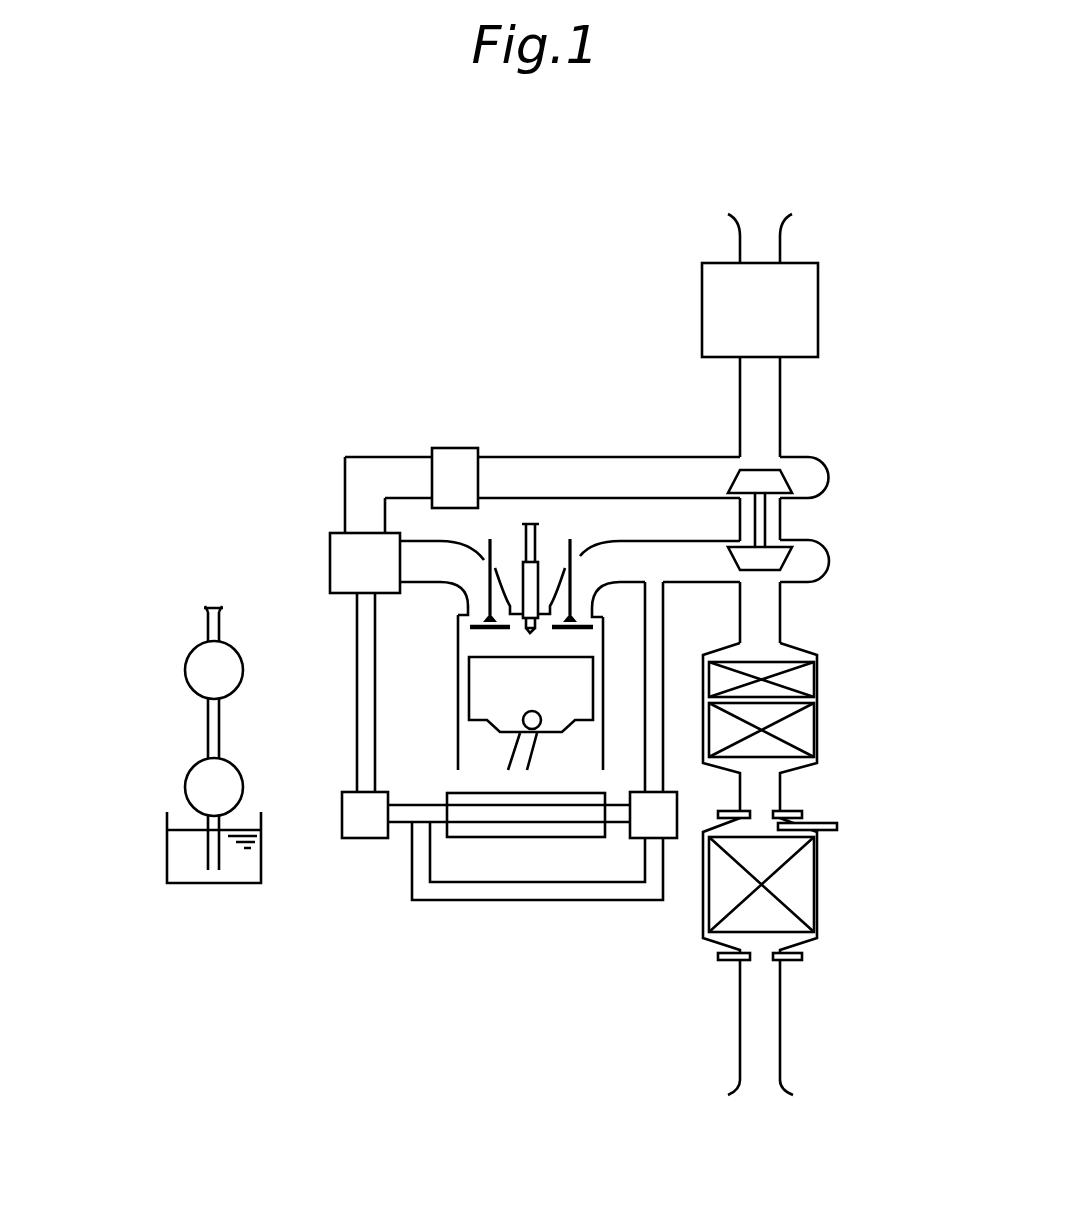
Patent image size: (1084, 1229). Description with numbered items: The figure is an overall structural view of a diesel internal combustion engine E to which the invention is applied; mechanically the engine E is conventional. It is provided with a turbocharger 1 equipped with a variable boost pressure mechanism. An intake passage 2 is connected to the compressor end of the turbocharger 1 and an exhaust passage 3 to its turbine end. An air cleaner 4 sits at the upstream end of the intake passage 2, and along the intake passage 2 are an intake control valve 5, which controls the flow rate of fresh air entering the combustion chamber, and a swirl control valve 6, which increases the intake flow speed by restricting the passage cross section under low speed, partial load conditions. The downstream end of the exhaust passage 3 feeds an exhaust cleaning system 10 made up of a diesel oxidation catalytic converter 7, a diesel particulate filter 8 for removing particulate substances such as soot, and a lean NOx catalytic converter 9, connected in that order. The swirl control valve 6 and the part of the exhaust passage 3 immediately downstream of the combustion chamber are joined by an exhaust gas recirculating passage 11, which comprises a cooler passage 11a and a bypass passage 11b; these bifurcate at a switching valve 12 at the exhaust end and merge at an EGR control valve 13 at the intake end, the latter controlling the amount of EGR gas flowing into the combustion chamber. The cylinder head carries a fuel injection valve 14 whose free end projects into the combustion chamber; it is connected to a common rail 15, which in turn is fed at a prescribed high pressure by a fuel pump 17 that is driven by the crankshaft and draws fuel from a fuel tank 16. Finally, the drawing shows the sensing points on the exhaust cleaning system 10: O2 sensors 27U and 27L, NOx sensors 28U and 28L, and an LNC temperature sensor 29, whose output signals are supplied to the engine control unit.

The internal combustion engine E is at (456, 700).
The turbocharger 1 is at (795, 523).
The intake passage 2 is at (645, 457).
The exhaust passage 3 is at (690, 584).
The air cleaner 4 is at (818, 318).
The intake control valve 5 is at (458, 450).
The swirl control valve 6 is at (338, 565).
The diesel oxidation catalytic converter 7 is at (805, 681).
The diesel particulate filter 8 is at (805, 737).
The lean NOx catalytic converter 9 is at (793, 878).
The exhaust cleaning system 10 is at (824, 869).
The exhaust gas recirculating passage 11 is at (510, 815).
The cooler passage 11a is at (473, 835).
The bypass passage 11b is at (442, 980).
The switching valve 12 is at (668, 826).
The EGR control valve 13 is at (368, 828).
The fuel injection valve 14 is at (535, 575).
The common rail 15 is at (193, 668).
The fuel tank 16 is at (175, 856).
The fuel pump 17 is at (193, 780).
The O2 sensor 27U is at (802, 814).
The O2 sensor 27L is at (795, 960).
The NOx sensor 28U is at (718, 814).
The NOx sensor 28L is at (725, 960).
The LNC temperature sensor 29 is at (837, 823).